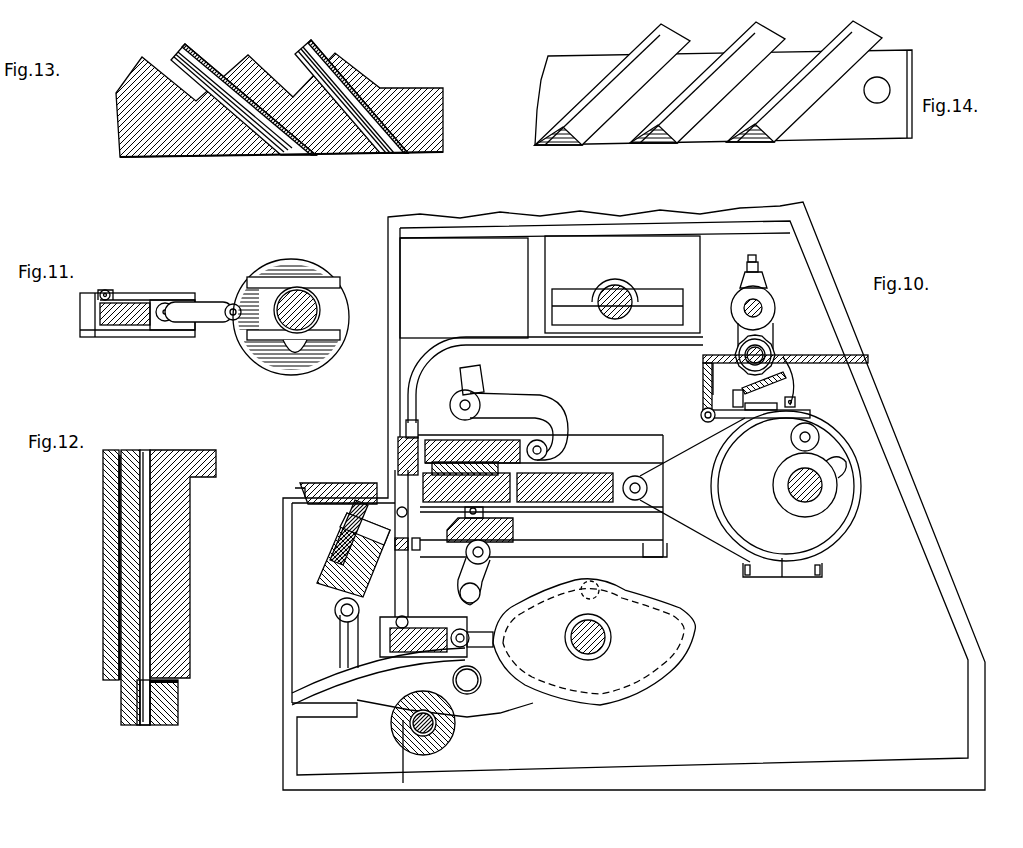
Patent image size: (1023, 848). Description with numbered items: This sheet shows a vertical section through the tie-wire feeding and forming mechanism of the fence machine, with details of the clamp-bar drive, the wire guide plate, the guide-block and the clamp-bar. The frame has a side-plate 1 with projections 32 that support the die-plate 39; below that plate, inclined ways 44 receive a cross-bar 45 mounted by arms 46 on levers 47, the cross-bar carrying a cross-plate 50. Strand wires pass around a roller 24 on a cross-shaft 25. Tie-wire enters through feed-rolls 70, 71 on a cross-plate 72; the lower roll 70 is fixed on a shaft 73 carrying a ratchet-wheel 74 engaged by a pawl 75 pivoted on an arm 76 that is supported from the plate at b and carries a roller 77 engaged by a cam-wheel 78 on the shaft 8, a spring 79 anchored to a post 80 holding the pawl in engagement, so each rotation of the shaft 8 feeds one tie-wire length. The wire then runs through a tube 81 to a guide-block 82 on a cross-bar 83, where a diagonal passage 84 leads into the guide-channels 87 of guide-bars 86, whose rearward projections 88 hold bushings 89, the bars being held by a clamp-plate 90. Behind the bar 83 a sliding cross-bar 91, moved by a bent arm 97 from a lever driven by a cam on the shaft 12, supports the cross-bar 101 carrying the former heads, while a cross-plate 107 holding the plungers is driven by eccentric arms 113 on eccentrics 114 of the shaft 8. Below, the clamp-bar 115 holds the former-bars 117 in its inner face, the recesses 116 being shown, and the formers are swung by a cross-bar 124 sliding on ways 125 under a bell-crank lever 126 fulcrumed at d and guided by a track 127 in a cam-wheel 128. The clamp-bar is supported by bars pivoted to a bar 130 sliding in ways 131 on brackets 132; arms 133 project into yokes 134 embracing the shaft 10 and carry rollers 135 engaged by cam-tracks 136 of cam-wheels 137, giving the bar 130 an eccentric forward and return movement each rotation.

In FIG. 10, the side-plate 1 is at (883, 423).
In FIG. 10, the shaft 8 is at (822, 490).
In FIG. 11, the transverse rotary shaft 10 is at (340, 298).
In FIG. 10, the transverse rotary shaft 10 is at (608, 638).
In FIG. 10, the shaft 12 is at (618, 284).
In FIG. 10, the roller 24 is at (457, 733).
In FIG. 10, the cross-shaft 25 is at (395, 737).
In FIG. 10, the projections 32 is at (288, 627).
In FIG. 10, the die-plate 39 is at (300, 503).
In FIG. 10, the inclined ways 44 is at (345, 528).
In FIG. 10, the cross-bar 45 is at (337, 563).
In FIG. 10, the arms 46 is at (340, 643).
In FIG. 10, the levers 47 is at (513, 703).
In FIG. 10, the cross-plate 50 is at (353, 535).
In FIG. 10, the lower feed-roll 70 is at (775, 347).
In FIG. 10, the feed-roll 71 is at (776, 303).
In FIG. 10, the cross-plate 72 is at (830, 353).
In FIG. 10, the shaft 73 is at (743, 357).
In FIG. 10, the ratchet-wheel 74 is at (743, 370).
In FIG. 10, the pawl 75 is at (793, 383).
In FIG. 10, the arm 76 is at (772, 418).
In FIG. 10, the roller 77 is at (818, 433).
In FIG. 10, the cam-wheel 78 is at (840, 473).
In FIG. 10, the contractile coiled spring 79 is at (800, 402).
In FIG. 10, the post 80 is at (703, 401).
In FIG. 13, the tube 81 is at (300, 47).
In FIG. 10, the tube 81 is at (486, 337).
In FIG. 13, the guide-block 82 is at (418, 100).
In FIG. 10, the guide-block 82 is at (406, 426).
In FIG. 12, the cross-bar 83 is at (183, 516).
In FIG. 10, the cross-bar 83 is at (398, 455).
In FIG. 13, the passage 84 is at (390, 153).
In FIG. 12, the guide-bars 86 is at (128, 592).
In FIG. 12, the guide-channels 87 is at (143, 566).
In FIG. 12, the rearward projections 88 is at (178, 706).
In FIG. 12, the bushings 89 is at (140, 707).
In FIG. 12, the clamp-plate 90 is at (103, 526).
In FIG. 10, the cross-bar 91 is at (563, 453).
In FIG. 10, the bent arm 97 is at (533, 403).
In FIG. 10, the cross-bar 101 is at (400, 487).
In FIG. 10, the cross-plate 107 is at (580, 505).
In FIG. 10, the eccentric arms 113 is at (686, 490).
In FIG. 10, the eccentrics 114 is at (825, 528).
In FIG. 14, the clamp-bar 115 is at (842, 140).
In FIG. 14, the groove 116 is at (733, 147).
In FIG. 14, the former-bars 117 is at (840, 40).
In FIG. 10, the cross-bar 124 is at (513, 527).
In FIG. 10, the ways 125 is at (650, 558).
In FIG. 10, the bell-crank lever 126 is at (494, 572).
In FIG. 10, the cam-track 127 is at (657, 675).
In FIG. 10, the cam-wheel 128 is at (695, 635).
In FIG. 11, the bar 130 is at (120, 330).
In FIG. 10, the bar 130 is at (420, 654).
In FIG. 11, the ways 131 is at (132, 295).
In FIG. 10, the brackets 132 is at (333, 690).
In FIG. 11, the arms 133 is at (205, 323).
In FIG. 11, the yokes 134 is at (247, 280).
In FIG. 11, the rollers 135 is at (226, 303).
In FIG. 11, the cam-tracks 136 is at (300, 270).
In FIG. 11, the cam-wheels 137 is at (292, 372).
In FIG. 10, the pivot b is at (698, 420).
In FIG. 10, the fulcrum d is at (460, 595).